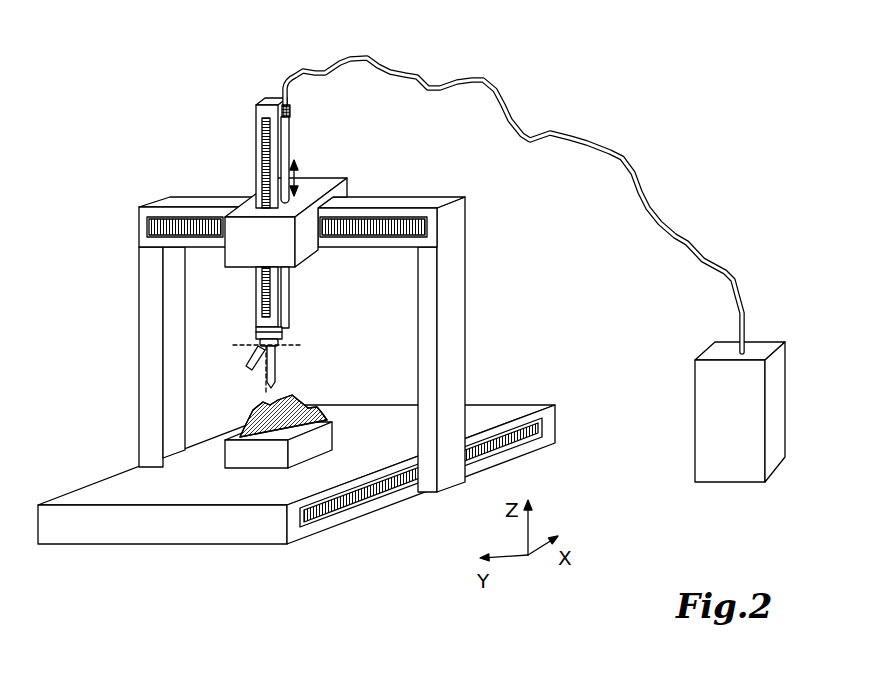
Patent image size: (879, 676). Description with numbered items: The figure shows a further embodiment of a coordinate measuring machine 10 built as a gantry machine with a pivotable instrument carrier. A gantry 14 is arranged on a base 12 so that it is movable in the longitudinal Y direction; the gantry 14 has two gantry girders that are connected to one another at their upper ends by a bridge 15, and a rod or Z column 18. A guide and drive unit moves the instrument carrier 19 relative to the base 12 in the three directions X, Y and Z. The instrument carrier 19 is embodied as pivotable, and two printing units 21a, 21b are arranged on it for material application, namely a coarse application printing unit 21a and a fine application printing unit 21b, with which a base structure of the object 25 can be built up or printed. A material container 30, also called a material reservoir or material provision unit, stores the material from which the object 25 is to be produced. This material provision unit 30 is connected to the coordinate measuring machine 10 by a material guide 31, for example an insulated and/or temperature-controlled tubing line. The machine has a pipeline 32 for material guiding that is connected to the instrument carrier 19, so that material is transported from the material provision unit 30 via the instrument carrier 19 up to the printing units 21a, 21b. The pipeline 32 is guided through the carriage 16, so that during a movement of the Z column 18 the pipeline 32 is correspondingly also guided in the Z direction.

The coordinate measuring machine 10 is at (492, 31).
The base 12 is at (294, 474).
The gantry 14 is at (478, 281).
The bridge 15 is at (302, 199).
The carriage 16 is at (304, 202).
The Z column 18 is at (243, 210).
The instrument carrier 19 is at (246, 333).
The coarse application printing unit 21a is at (224, 374).
The fine application printing unit 21b is at (301, 371).
The object 25 is at (247, 422).
The material container 30 is at (769, 412).
The material guide 31 is at (513, 205).
The pipeline 32 is at (325, 213).